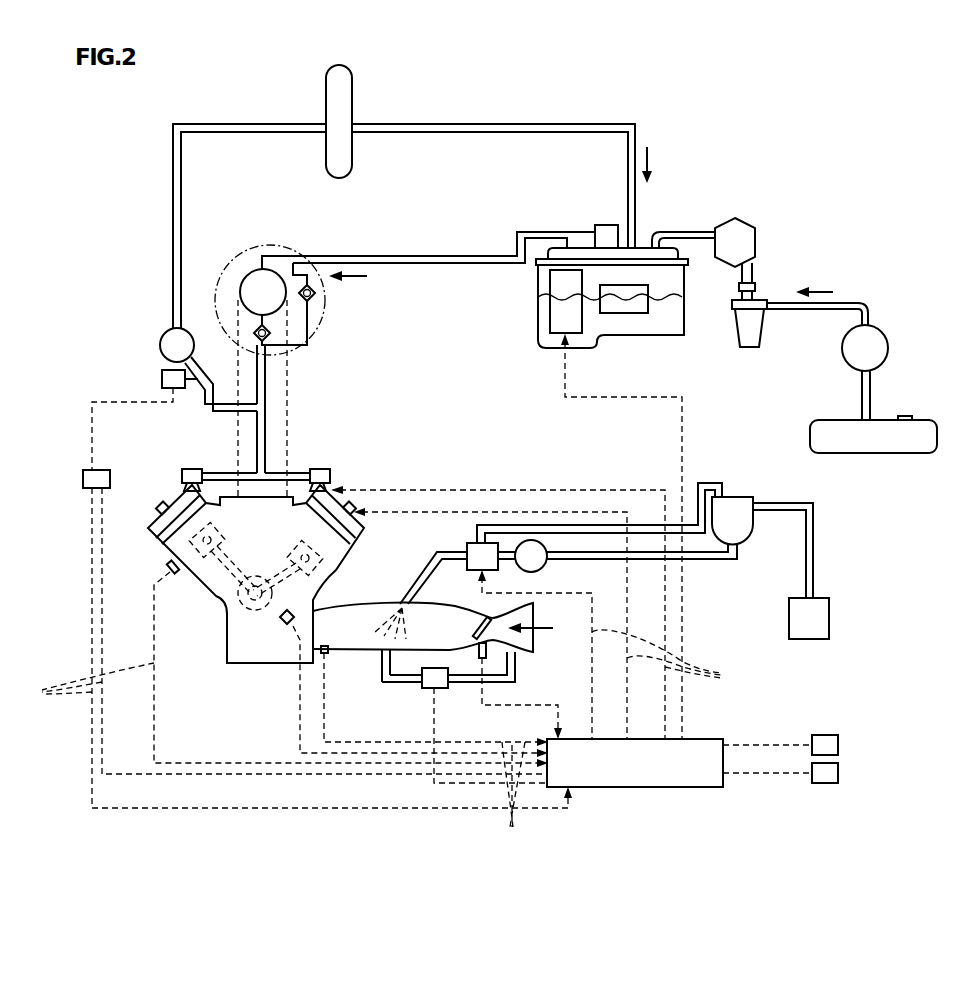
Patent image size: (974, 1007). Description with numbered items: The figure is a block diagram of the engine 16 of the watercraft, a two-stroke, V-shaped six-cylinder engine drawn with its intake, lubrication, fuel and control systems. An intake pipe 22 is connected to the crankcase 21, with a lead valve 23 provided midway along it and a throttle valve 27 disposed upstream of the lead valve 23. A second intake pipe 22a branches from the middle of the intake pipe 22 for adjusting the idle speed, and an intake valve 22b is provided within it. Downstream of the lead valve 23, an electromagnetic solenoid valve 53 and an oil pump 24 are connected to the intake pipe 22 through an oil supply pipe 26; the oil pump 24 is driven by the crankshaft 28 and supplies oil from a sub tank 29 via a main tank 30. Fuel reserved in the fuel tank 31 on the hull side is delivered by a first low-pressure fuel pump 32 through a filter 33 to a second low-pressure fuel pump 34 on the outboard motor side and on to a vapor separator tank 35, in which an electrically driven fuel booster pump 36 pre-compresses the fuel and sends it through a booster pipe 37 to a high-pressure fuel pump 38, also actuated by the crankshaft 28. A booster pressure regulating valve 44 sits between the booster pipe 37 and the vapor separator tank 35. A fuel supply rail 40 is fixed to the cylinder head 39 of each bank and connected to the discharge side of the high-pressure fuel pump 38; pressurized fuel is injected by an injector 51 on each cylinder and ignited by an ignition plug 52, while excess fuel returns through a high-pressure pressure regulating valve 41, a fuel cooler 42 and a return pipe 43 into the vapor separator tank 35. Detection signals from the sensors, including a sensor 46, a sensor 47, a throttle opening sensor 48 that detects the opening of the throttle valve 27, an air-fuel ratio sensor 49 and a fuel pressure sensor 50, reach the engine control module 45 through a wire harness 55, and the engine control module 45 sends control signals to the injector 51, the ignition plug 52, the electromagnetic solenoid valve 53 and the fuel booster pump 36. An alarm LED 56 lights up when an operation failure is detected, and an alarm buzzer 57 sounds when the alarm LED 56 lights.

The engine 16 is at (212, 606).
The crankcase 21 is at (240, 656).
The intake pipe 22 is at (368, 655).
The second intake pipe 22a is at (466, 682).
The intake valve 22b is at (428, 690).
The lead valve 23 is at (420, 678).
The oil pump 24 is at (535, 571).
The oil supply pipe 26 is at (412, 585).
The throttle valve 27 is at (477, 628).
The crankshaft 28 is at (253, 612).
The sub tank 29 is at (829, 617).
The main tank 30 is at (736, 497).
The fuel tank 31 is at (905, 454).
The first low-pressure fuel pump 32 is at (888, 345).
The filter 33 is at (749, 348).
The second low-pressure fuel pump 34 is at (756, 240).
The vapor separator tank 35 is at (538, 281).
The fuel booster pump 36 is at (550, 318).
The booster pipe 37 is at (413, 255).
The high-pressure fuel pump 38 is at (291, 248).
The cylinder head 39 is at (362, 538).
The fuel supply rail 40 is at (194, 469).
The high-pressure pressure regulating valve 41 is at (160, 345).
The fuel cooler 42 is at (352, 88).
The return pipe 43 is at (511, 133).
The booster pressure regulating valve 44 is at (606, 225).
The engine control module 45 is at (668, 788).
The sensor 46 is at (283, 630).
The sensor 47 is at (326, 655).
The throttle opening sensor 48 is at (490, 652).
The air-fuel ratio sensor 49 is at (172, 574).
The fuel pressure sensor 50 is at (162, 378).
The injector 51 is at (185, 487).
The ignition plug 52 is at (160, 504).
The electromagnetic solenoid valve 53 is at (467, 548).
The wire harness 55 is at (384, 621).
The alarm LED 56 is at (838, 745).
The alarm buzzer 57 is at (838, 773).